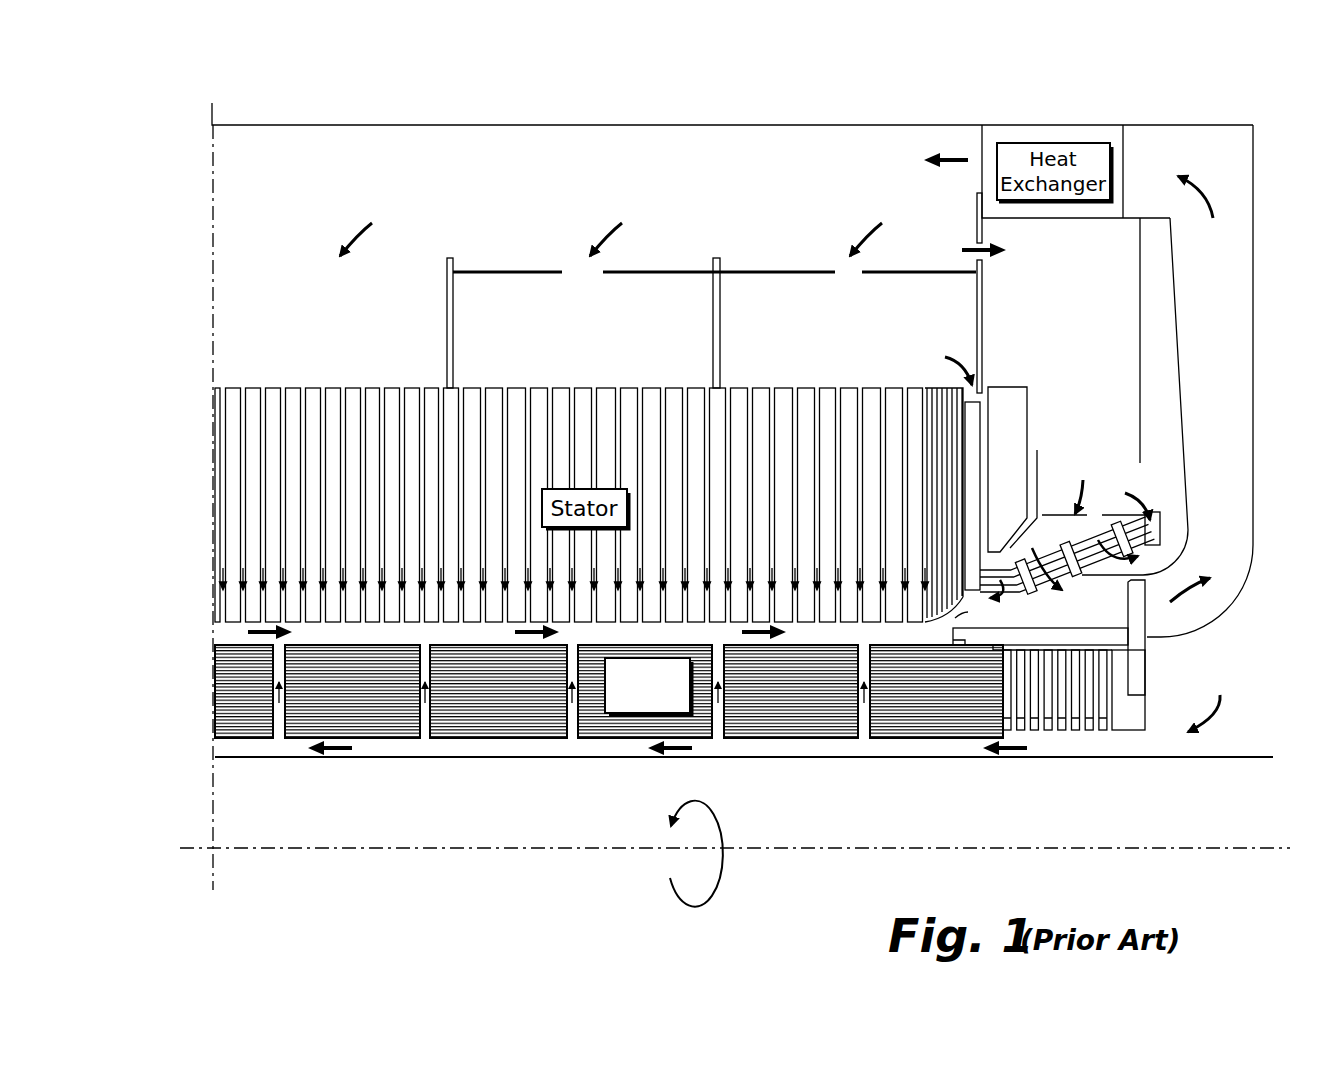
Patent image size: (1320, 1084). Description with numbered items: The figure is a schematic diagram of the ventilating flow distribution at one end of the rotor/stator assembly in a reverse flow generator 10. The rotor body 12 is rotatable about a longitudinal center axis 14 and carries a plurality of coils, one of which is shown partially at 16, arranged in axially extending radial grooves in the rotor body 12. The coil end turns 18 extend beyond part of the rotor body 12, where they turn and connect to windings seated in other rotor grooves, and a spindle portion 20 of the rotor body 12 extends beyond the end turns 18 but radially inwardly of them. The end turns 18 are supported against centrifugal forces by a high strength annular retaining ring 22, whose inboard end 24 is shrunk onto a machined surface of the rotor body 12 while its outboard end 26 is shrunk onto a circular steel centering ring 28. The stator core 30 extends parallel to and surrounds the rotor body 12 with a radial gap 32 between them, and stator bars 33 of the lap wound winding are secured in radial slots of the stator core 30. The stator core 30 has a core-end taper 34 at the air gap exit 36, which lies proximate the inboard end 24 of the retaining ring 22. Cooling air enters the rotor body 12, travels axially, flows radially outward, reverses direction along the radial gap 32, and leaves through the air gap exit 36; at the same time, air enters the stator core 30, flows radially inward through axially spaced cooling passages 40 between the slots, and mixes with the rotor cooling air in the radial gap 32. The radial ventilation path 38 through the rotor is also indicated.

The reverse flow generator 10 is at (165, 416).
The rotor body 12 is at (718, 707).
The longitudinal center axis 14 is at (372, 849).
The coil 16 is at (798, 745).
The coil end turns 18 is at (1068, 737).
The spindle portion 20 is at (1228, 771).
The retaining ring 22 is at (1070, 624).
The inboard end 24 is at (965, 635).
The outboard end 26 is at (1105, 633).
The centering ring 28 is at (1137, 710).
The stator core 30 is at (832, 384).
The radial gap 32 is at (360, 634).
The stator bars 33 is at (1000, 570).
The core-end taper 34 is at (959, 600).
The air gap exit 36 is at (957, 620).
The rotor radial ventilation duct 38 is at (718, 662).
The cooling passages 40 is at (596, 410).